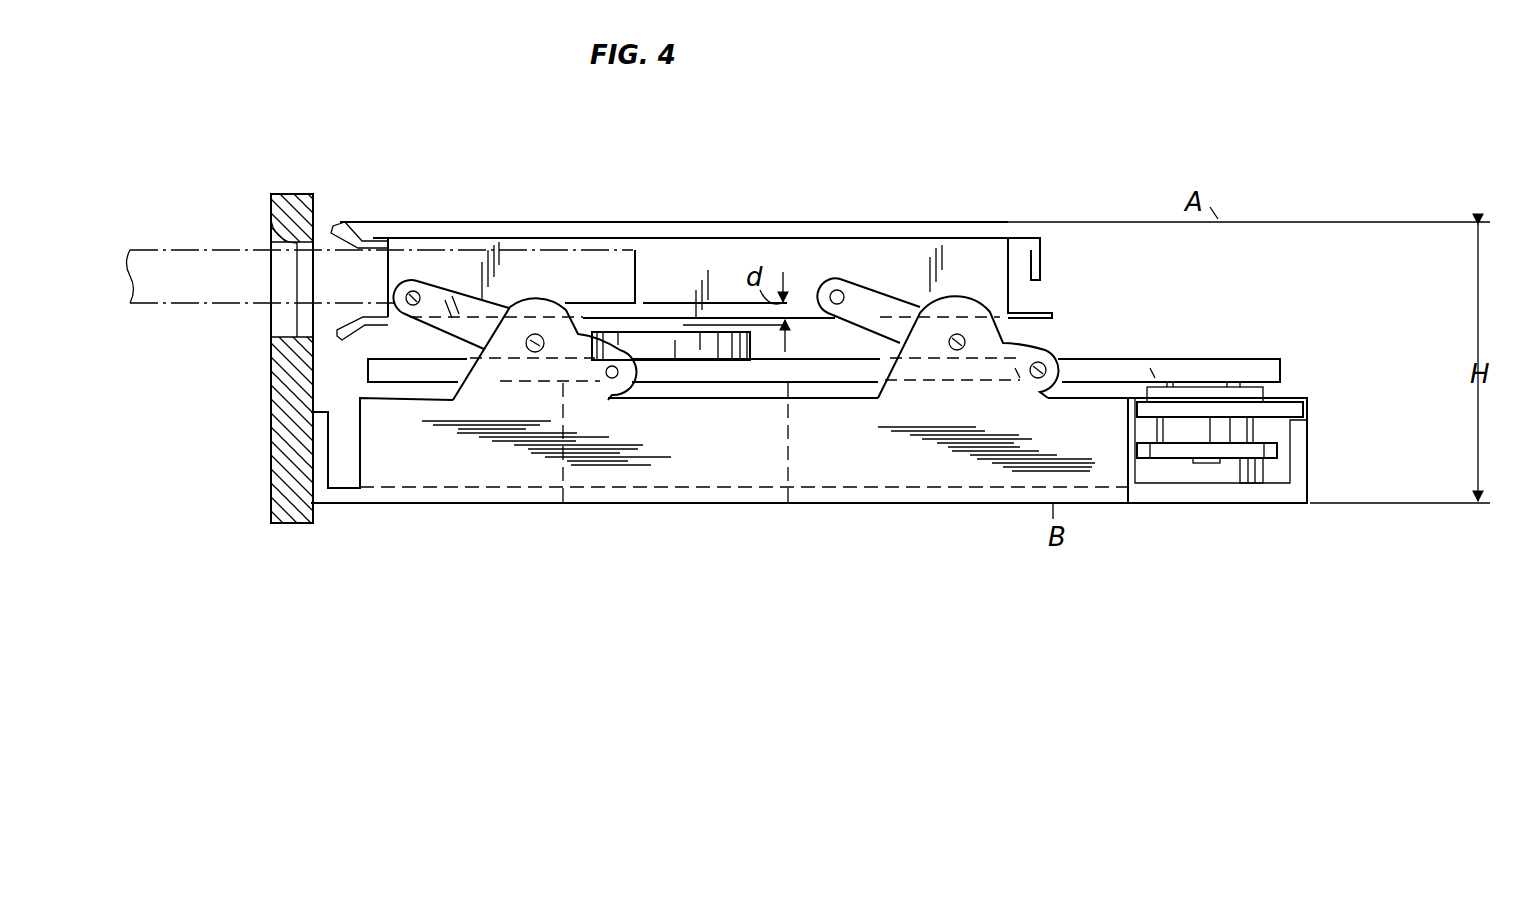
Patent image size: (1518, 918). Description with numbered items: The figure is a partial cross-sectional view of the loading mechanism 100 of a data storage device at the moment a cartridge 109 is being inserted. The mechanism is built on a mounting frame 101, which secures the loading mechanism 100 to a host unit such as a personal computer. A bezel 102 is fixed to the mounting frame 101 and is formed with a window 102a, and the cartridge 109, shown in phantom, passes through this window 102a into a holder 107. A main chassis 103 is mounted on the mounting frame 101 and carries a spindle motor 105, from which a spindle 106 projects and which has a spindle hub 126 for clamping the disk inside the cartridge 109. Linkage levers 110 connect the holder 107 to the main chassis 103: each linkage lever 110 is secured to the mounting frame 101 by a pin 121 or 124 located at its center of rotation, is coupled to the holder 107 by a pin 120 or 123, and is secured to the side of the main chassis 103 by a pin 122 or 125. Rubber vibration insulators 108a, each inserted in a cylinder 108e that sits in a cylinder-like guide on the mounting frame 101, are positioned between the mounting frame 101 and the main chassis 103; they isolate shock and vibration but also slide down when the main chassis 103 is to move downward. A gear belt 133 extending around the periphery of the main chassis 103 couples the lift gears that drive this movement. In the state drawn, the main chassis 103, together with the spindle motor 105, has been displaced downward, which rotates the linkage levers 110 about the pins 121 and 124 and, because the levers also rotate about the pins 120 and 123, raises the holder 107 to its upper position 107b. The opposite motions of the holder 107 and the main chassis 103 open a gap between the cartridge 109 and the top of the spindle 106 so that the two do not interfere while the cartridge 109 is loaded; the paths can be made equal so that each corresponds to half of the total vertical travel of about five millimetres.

The loading mechanism 100 is at (516, 542).
The mounting frame 101 is at (1160, 497).
The bezel 102 is at (288, 515).
The window 102a is at (271, 240).
The main chassis 103 is at (1143, 364).
The spindle motor 105 is at (787, 473).
The spindle 106 is at (674, 326).
The holder 107 is at (632, 242).
The upper position of holder 107b is at (500, 241).
The rubber vibration insulator 108a is at (1276, 448).
The cylinder 108e is at (1253, 427).
The cartridge 109 is at (194, 260).
The linkage lever 110 is at (440, 295).
The pin 120 is at (413, 291).
The pin 121 is at (538, 336).
The pin 122 is at (623, 392).
The pin 123 is at (837, 290).
The pin 124 is at (962, 338).
The pin 125 is at (1044, 366).
The spindle hub 126 is at (713, 350).
The gear belt 133 is at (1252, 481).